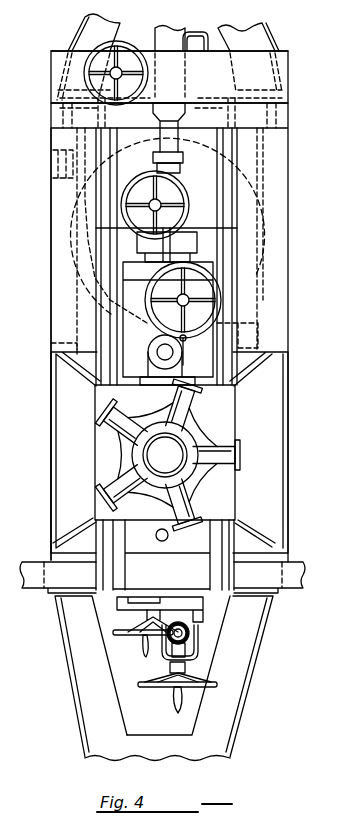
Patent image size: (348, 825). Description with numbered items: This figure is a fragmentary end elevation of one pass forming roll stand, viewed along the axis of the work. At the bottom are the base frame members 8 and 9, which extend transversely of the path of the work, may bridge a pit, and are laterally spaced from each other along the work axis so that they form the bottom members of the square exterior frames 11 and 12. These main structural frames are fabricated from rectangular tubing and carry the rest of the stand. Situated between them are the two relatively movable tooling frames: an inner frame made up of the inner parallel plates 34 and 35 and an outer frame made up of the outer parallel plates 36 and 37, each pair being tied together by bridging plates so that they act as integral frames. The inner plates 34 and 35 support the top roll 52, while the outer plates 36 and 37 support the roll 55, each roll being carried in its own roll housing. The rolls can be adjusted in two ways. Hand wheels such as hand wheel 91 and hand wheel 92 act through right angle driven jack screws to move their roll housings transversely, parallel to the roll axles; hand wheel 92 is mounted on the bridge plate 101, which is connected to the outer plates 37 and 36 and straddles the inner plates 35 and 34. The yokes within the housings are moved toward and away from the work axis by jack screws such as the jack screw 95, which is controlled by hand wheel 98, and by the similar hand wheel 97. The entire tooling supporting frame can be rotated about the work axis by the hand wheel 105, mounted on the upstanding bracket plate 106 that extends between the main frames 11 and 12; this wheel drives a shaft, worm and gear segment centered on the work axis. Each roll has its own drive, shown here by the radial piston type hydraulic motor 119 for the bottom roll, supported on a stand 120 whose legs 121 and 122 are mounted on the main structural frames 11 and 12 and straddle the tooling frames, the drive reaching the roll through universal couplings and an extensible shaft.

The base frame member 8 is at (270, 580).
The base frame member 9 is at (62, 578).
The square exterior frame 11 is at (294, 206).
The square exterior frame 12 is at (48, 292).
The inner parallel plate 34 is at (222, 245).
The inner parallel plate 35 is at (113, 330).
The outer parallel plate 36 is at (232, 268).
The outer parallel plate 37 is at (102, 307).
The top roll 52 is at (88, 278).
The roll 55 is at (51, 345).
The hand wheel 91 is at (120, 650).
The hand wheel 92 is at (137, 178).
The jack screw 95 is at (165, 378).
The hand wheel 97 is at (212, 690).
The hand wheel 98 is at (225, 288).
The bridge plate 101 is at (195, 195).
The hand wheel 105 is at (122, 42).
The upstanding bracket plate 106 is at (290, 62).
The radial piston type hydraulic motor 119 is at (243, 452).
The stand 120 is at (282, 500).
The leg 121 is at (75, 35).
The leg 122 is at (258, 35).